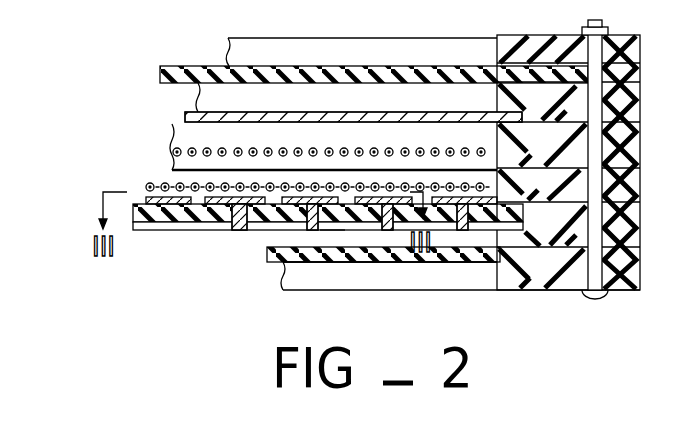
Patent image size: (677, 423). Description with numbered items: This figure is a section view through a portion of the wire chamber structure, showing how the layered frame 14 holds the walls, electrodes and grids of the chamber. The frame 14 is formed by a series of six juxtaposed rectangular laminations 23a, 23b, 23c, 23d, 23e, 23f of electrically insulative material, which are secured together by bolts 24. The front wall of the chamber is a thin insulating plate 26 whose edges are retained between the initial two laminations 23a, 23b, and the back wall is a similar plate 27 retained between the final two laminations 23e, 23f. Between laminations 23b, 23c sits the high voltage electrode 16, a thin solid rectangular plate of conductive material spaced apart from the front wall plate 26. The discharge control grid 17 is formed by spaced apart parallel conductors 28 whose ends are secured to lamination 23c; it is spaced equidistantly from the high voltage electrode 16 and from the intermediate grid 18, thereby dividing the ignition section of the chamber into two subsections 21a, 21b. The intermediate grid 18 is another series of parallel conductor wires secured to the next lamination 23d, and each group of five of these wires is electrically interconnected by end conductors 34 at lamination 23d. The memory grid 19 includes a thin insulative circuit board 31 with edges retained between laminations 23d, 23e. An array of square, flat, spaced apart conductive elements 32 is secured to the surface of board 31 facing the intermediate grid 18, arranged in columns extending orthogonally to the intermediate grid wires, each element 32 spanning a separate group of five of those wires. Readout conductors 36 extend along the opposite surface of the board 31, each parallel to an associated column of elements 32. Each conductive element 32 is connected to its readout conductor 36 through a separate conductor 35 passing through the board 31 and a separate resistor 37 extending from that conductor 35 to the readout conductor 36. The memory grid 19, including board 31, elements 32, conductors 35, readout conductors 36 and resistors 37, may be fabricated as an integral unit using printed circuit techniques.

The frame 14 is at (466, 300).
The high voltage electrode 16 is at (421, 113).
The discharge control grid 17 is at (438, 145).
The intermediate grid 18 is at (257, 165).
The memory grid 19 is at (212, 223).
The subsection of the ignition section 21a is at (192, 140).
The subsection of the ignition section 21b is at (176, 175).
The lamination 23a is at (545, 44).
The lamination 23b is at (566, 107).
The lamination 23c is at (566, 155).
The lamination 23d is at (566, 194).
The lamination 23e is at (573, 230).
The lamination 23f is at (566, 285).
The bolt 24 is at (601, 298).
The plate 26 is at (190, 66).
The plate 27 is at (360, 260).
The conductors 28 is at (314, 134).
The circuit board 31 is at (152, 212).
The conductive elements 32 is at (383, 268).
The end conductors 34 is at (477, 192).
The conductors 35 is at (308, 215).
The readout conductors 36 is at (332, 225).
The resistors 37 is at (238, 228).